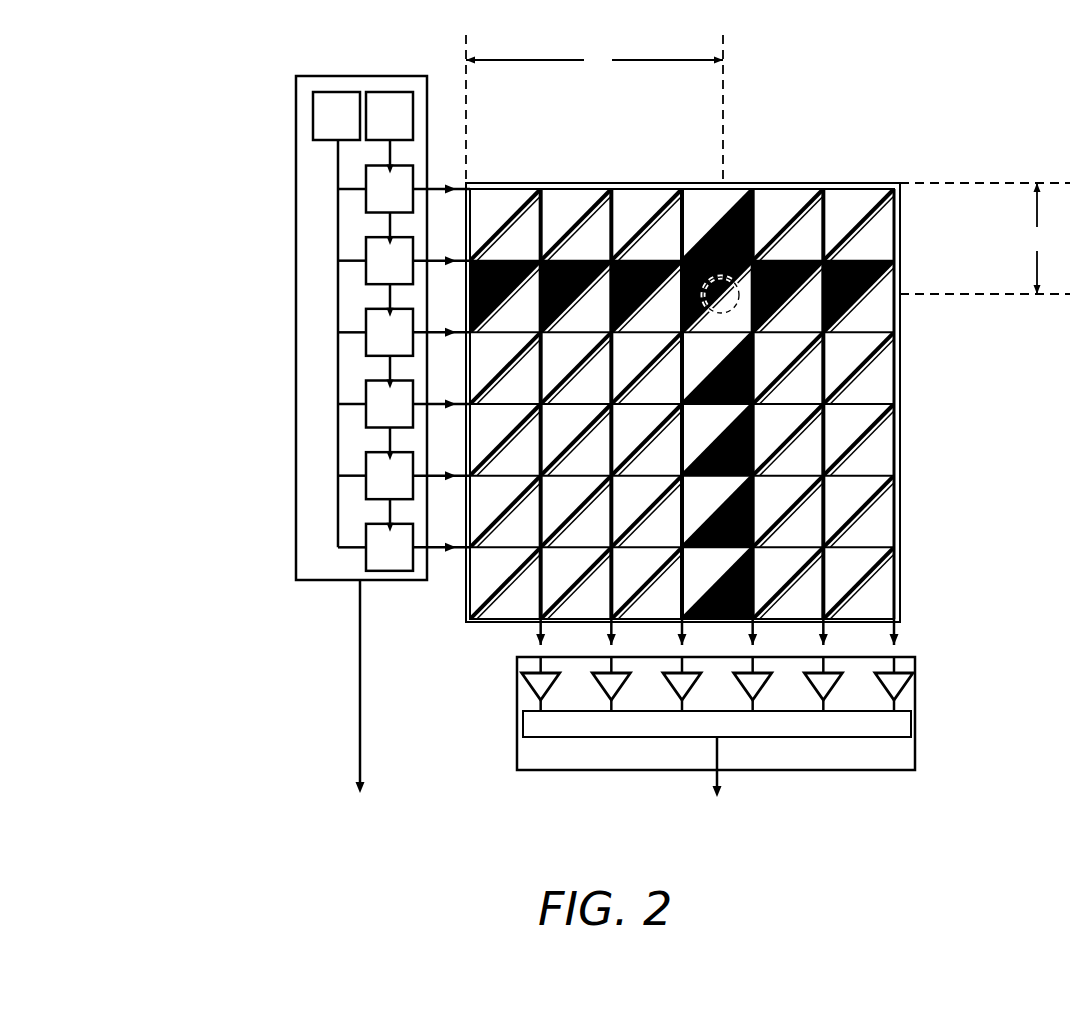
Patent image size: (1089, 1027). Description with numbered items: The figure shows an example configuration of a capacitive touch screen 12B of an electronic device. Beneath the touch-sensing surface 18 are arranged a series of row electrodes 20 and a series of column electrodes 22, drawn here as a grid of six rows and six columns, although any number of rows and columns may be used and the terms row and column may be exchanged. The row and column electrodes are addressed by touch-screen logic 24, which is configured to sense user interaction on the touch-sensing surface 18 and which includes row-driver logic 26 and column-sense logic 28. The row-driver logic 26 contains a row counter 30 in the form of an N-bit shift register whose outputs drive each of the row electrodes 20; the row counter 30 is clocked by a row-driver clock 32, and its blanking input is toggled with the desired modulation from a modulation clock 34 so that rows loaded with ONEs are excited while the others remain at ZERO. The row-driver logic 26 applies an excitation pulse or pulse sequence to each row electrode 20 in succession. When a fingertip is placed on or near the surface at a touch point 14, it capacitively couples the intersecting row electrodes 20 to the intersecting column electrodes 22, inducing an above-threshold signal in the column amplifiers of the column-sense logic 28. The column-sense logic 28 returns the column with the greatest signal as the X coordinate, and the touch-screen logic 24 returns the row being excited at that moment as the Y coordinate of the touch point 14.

The touch screen 12B is at (1030, 105).
The touch point 14 is at (727, 277).
The touch-sensing surface 18 is at (901, 579).
The row electrodes 20 is at (914, 304).
The column electrodes 22 is at (714, 170).
The touch-screen logic 24 is at (192, 77).
The row-driver logic 26 is at (296, 337).
The column-sense logic 28 is at (915, 712).
The row counter 30 is at (308, 529).
The row-driver clock 32 is at (403, 129).
The modulation clock 34 is at (350, 129).